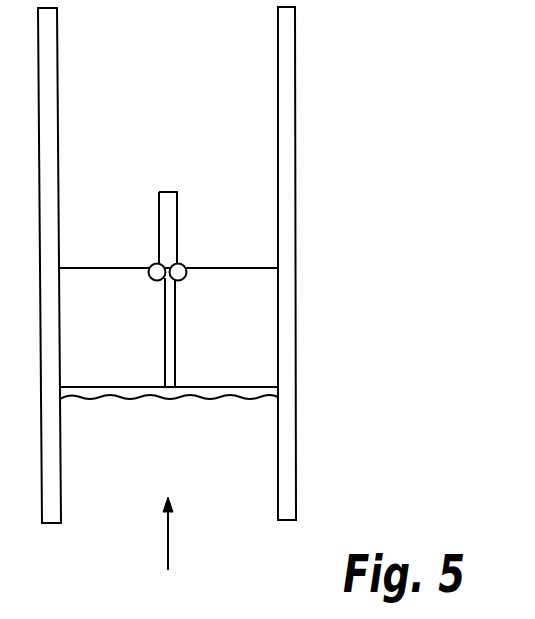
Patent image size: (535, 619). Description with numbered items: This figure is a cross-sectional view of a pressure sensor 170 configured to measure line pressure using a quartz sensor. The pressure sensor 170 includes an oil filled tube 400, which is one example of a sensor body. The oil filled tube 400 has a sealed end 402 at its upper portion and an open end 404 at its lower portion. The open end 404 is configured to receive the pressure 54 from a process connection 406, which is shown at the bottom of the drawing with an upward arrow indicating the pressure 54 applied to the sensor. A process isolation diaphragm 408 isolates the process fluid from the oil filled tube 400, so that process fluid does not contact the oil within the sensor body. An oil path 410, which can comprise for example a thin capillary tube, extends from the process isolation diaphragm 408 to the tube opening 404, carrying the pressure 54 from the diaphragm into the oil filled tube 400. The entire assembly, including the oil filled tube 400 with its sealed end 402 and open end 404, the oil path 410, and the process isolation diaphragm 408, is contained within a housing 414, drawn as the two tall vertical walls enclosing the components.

The pressure sensor 170 is at (215, 118).
The sealed end 402 is at (178, 180).
The oil filled tube 400 is at (178, 210).
The open end 404 is at (186, 263).
The housing 414 is at (219, 254).
The oil path 410 is at (176, 322).
The process isolation diaphragm 408 is at (230, 400).
The process connection 406 is at (175, 478).
The pressure 54 is at (151, 533).